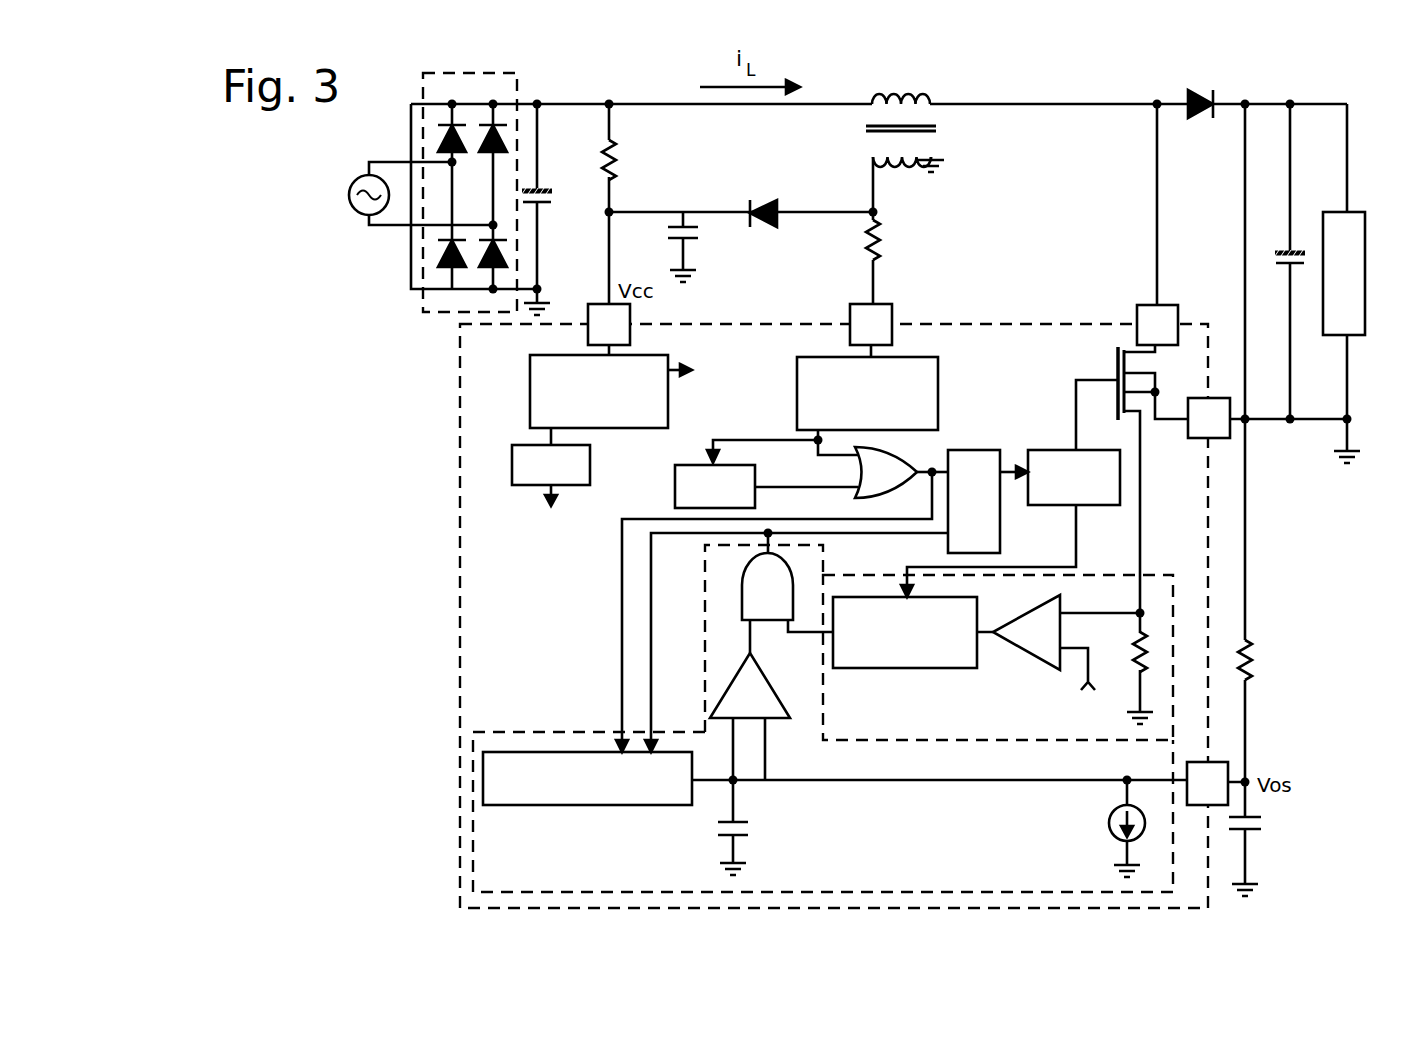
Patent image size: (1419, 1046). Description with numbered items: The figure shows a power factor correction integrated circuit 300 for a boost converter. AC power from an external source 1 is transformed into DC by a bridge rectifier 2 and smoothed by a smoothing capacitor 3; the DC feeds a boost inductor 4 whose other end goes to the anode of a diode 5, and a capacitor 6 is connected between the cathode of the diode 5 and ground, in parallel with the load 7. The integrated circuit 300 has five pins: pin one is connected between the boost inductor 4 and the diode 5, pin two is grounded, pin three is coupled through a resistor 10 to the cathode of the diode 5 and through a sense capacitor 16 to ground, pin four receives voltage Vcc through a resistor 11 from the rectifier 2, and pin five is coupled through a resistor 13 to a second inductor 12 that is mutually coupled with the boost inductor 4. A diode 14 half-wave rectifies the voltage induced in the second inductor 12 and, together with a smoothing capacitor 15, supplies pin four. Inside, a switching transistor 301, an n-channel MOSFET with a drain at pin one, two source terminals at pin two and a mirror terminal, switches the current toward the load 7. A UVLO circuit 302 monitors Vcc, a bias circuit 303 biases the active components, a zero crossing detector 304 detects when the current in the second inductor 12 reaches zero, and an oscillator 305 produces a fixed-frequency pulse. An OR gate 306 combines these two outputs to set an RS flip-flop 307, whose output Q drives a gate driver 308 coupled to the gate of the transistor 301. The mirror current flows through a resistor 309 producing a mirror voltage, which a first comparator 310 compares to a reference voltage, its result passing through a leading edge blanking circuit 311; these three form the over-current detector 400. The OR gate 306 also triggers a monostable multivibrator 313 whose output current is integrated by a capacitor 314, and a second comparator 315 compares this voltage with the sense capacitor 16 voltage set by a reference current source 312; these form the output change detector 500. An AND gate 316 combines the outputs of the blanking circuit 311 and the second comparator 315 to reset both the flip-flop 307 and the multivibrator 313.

The external source 1 is at (349, 195).
The bridge rectifier 2 is at (464, 73).
The smoothing capacitor 3 is at (565, 208).
The boost inductor 4 is at (902, 102).
The diode 5 is at (1200, 95).
The capacitor 6 is at (1283, 266).
The load 7 is at (1350, 212).
The resistor 10 is at (1253, 658).
The resistor 11 is at (615, 158).
The second inductor 12 is at (915, 155).
The resistor 13 is at (883, 248).
The diode 14 is at (761, 198).
The smoothing capacitor 15 is at (697, 237).
The sense capacitor 16 is at (1259, 820).
The power factor correction integrated circuit 300 is at (985, 324).
The switching transistor 301 is at (1115, 352).
The UVLO circuit 302 is at (654, 356).
The bias circuit 303 is at (512, 444).
The zero crossing detector 304 is at (926, 357).
The oscillator 305 is at (734, 467).
The OR gate 306 is at (852, 497).
The RS flip-flop 307 is at (970, 450).
The gate driver 308 is at (1100, 505).
The resistor 309 is at (1133, 644).
The first comparator 310 is at (1047, 605).
The leading edge blanking circuit 311 is at (905, 668).
The reference current source 312 is at (1107, 840).
The monostable multivibrator 313 is at (595, 805).
The integrator 314 is at (748, 828).
The second comparator 315 is at (760, 676).
The AND gate 316 is at (745, 590).
The over-current detector circuit 400 is at (1158, 575).
The output change detector circuit 500 is at (503, 715).